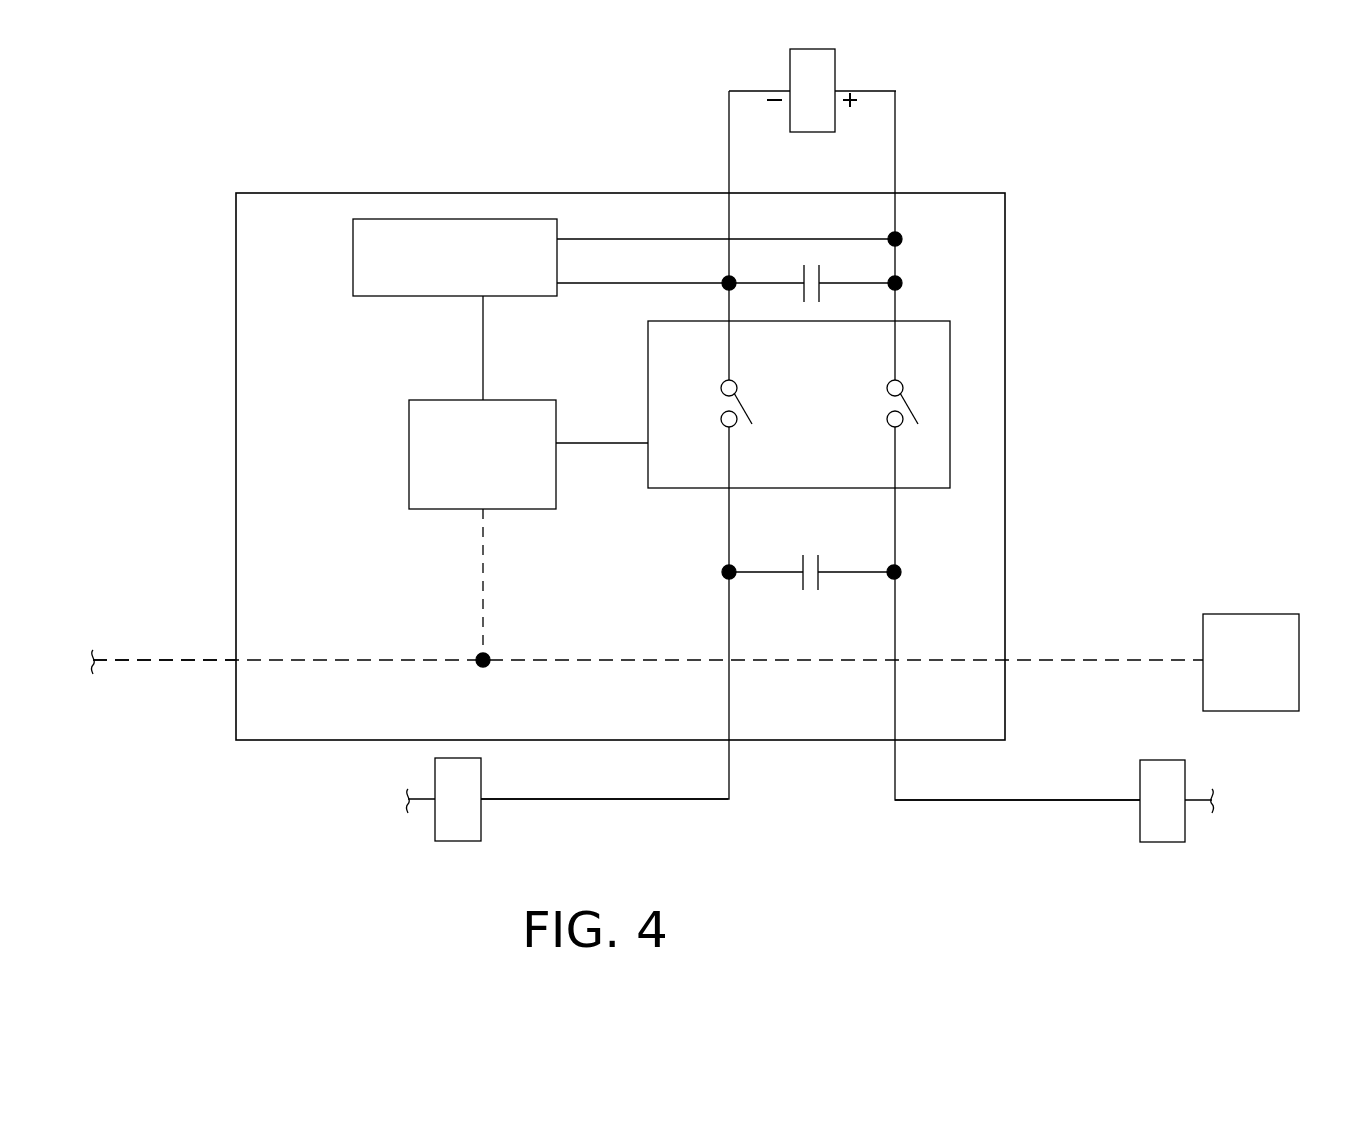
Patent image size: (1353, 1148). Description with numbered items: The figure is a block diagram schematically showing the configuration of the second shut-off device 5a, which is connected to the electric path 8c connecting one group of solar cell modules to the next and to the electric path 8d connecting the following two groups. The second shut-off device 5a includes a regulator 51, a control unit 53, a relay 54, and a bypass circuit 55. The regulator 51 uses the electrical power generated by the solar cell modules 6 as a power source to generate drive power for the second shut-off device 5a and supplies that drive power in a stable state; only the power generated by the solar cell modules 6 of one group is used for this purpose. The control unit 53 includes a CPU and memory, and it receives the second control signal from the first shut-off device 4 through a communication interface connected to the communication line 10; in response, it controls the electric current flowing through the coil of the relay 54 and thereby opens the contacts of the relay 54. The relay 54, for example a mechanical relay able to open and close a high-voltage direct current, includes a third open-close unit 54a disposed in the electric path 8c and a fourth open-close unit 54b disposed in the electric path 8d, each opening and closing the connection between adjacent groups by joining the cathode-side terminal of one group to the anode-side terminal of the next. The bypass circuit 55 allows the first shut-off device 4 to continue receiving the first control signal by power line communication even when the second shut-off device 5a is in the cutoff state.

The second shut-off device 5a is at (985, 186).
The solar cell module 6 is at (790, 62).
The regulator 51 is at (353, 258).
The control unit 53 is at (409, 455).
The relay 54 is at (952, 455).
The third open-close unit 54a is at (912, 407).
The fourth open-close unit 54b is at (748, 405).
The bypass circuit 55 is at (857, 571).
The communication line 10 is at (147, 662).
The electric path 8d is at (587, 800).
The electric path 8c is at (1043, 800).
The first shut-off device 4 is at (1253, 608).